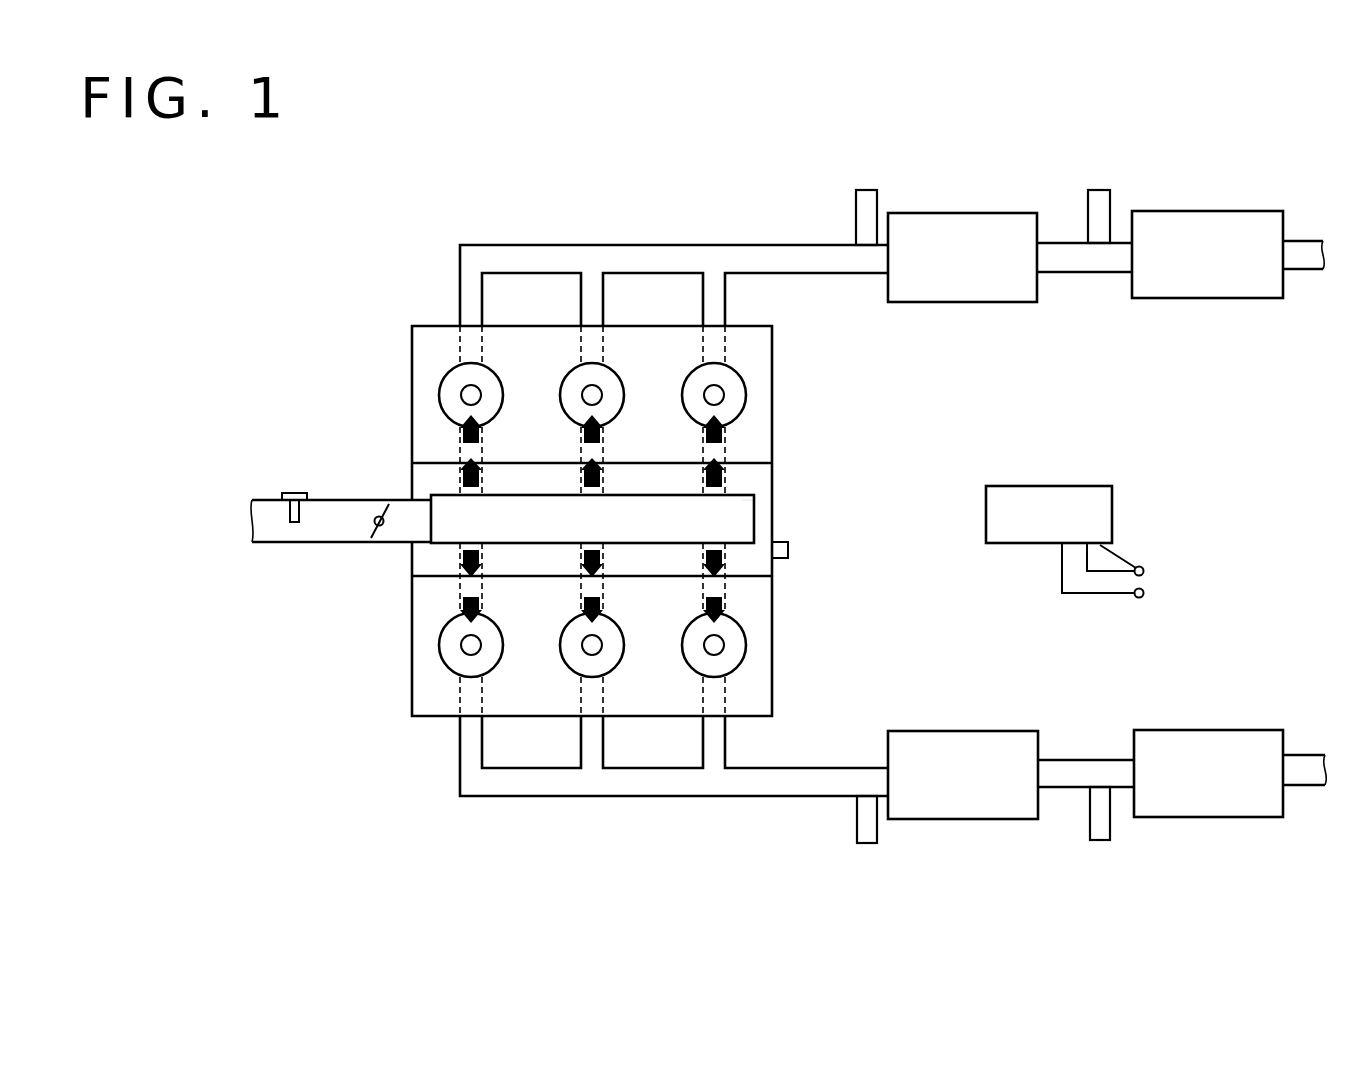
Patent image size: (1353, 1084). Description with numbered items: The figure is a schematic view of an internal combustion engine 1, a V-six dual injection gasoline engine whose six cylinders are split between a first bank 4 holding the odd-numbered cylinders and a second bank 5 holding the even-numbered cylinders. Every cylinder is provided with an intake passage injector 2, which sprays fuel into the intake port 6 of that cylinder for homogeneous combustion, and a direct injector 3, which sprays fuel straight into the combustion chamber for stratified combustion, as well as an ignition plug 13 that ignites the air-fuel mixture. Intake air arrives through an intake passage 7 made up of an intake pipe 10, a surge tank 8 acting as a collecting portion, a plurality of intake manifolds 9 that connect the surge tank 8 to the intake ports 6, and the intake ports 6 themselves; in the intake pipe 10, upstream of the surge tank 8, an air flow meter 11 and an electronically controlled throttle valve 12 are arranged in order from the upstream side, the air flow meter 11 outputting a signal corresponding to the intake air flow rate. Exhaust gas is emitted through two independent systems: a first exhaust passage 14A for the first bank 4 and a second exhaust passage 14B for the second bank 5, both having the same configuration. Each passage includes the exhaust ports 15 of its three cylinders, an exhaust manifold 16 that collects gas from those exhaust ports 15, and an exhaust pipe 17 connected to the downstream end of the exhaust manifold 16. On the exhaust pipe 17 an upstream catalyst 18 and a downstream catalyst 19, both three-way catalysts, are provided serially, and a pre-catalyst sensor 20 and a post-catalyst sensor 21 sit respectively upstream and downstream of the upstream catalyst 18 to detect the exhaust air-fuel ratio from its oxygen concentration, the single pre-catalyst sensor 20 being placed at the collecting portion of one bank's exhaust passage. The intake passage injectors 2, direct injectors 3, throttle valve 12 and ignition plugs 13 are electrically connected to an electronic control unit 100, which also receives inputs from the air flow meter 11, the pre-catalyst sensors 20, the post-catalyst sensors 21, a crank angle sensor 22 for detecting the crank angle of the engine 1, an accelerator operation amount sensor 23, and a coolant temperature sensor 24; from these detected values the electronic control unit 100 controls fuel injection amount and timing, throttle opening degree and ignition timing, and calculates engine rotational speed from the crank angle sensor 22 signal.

The internal combustion engine 1 is at (357, 251).
The intake passage injector 2 is at (452, 487).
The direct injector 3 is at (452, 430).
The first bank 4 is at (407, 355).
The second bank 5 is at (407, 692).
The intake port 6 is at (452, 455).
The intake passage 7 is at (325, 526).
The surge tank 8 is at (738, 520).
The intake manifold 9 is at (733, 483).
The intake pipe 10 is at (352, 543).
The air flow meter 11 is at (293, 493).
The throttle valve 12 is at (376, 513).
The ignition plug 13 is at (720, 392).
The first exhaust passage 14A is at (778, 248).
The second exhaust passage 14B is at (760, 799).
The exhaust port 15 is at (730, 345).
The exhaust manifold 16 is at (628, 245).
The exhaust pipe 17 is at (1062, 243).
The upstream catalyst 18 is at (965, 213).
The downstream catalyst 19 is at (1210, 211).
The pre-catalyst sensor 20 is at (866, 190).
The post-catalyst sensor 21 is at (1100, 190).
The crank angle sensor 22 is at (790, 548).
The accelerator operation amount sensor 23 is at (1143, 570).
The coolant temperature sensor 24 is at (1143, 593).
The electronic control unit 100 is at (1050, 486).